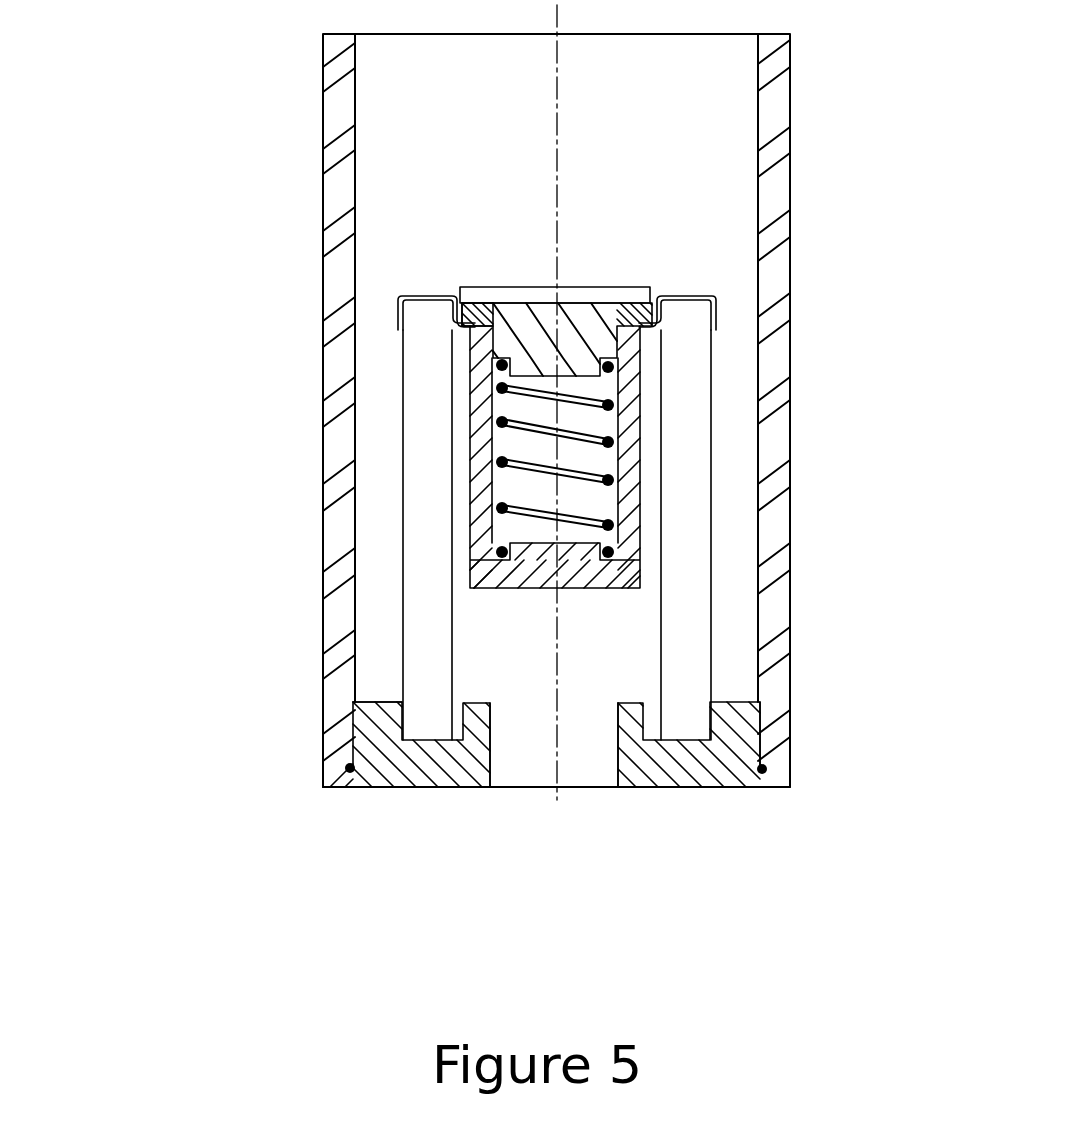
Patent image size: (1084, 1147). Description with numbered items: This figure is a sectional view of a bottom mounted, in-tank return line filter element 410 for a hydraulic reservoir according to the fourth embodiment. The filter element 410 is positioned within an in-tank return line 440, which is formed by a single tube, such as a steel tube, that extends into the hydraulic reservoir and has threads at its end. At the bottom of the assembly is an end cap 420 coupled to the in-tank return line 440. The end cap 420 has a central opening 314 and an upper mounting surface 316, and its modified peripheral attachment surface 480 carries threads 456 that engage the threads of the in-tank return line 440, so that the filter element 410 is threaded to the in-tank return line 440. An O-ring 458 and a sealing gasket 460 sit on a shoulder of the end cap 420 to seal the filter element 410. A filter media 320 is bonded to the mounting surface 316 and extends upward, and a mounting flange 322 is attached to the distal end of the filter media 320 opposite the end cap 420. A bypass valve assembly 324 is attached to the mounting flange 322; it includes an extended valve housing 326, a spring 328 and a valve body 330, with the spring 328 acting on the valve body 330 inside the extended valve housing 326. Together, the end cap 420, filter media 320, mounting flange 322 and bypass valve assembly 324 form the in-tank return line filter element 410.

The filter media 320 is at (415, 380).
The mounting flange 322 is at (716, 309).
The bypass valve assembly 324 is at (614, 271).
The extended valve housing 326 is at (480, 313).
The spring 328 is at (640, 478).
The valve body 330 is at (640, 335).
The in-tank return line 440 is at (790, 530).
The in-tank return line filter element 410 is at (522, 818).
The O-ring 458 is at (383, 788).
The end cap 420 is at (645, 788).
The central opening 314 is at (618, 753).
The upper mounting surface 316 is at (708, 742).
The threads 456 is at (352, 715).
The sealing gasket 460 is at (332, 782).
The peripheral attachment surface 480 is at (763, 727).